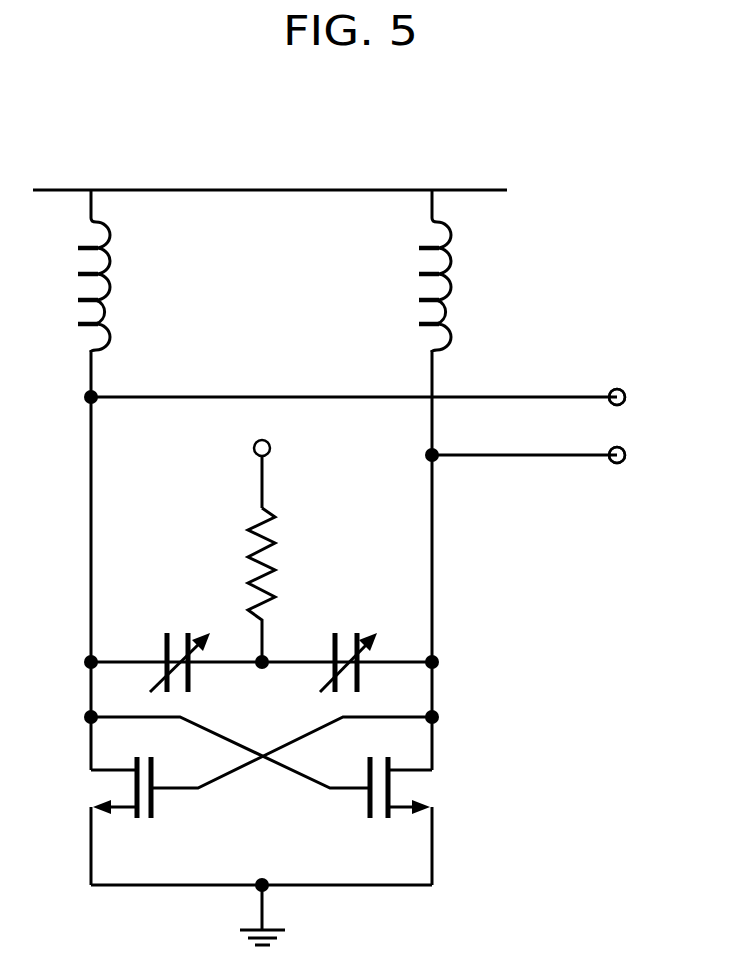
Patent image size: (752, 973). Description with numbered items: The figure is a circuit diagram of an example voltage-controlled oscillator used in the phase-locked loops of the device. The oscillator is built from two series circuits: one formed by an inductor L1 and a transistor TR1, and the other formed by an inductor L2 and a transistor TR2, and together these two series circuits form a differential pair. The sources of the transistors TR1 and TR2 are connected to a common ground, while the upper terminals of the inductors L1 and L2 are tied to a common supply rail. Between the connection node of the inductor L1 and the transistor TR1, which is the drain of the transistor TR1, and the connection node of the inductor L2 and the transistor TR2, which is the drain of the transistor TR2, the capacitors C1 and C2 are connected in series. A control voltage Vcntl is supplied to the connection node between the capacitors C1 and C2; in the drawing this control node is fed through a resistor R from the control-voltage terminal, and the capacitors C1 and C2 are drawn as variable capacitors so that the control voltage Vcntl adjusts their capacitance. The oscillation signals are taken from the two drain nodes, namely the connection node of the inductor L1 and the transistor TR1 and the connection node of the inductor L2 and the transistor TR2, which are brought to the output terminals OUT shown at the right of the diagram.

The inductor L1 is at (113, 288).
The inductor L2 is at (457, 288).
The resistor R is at (280, 558).
The capacitor C1 is at (174, 622).
The capacitor C2 is at (343, 622).
The transistor TR1 is at (142, 822).
The transistor TR2 is at (358, 797).
The output terminals OUT is at (663, 426).
The control voltage Vcntl is at (215, 474).